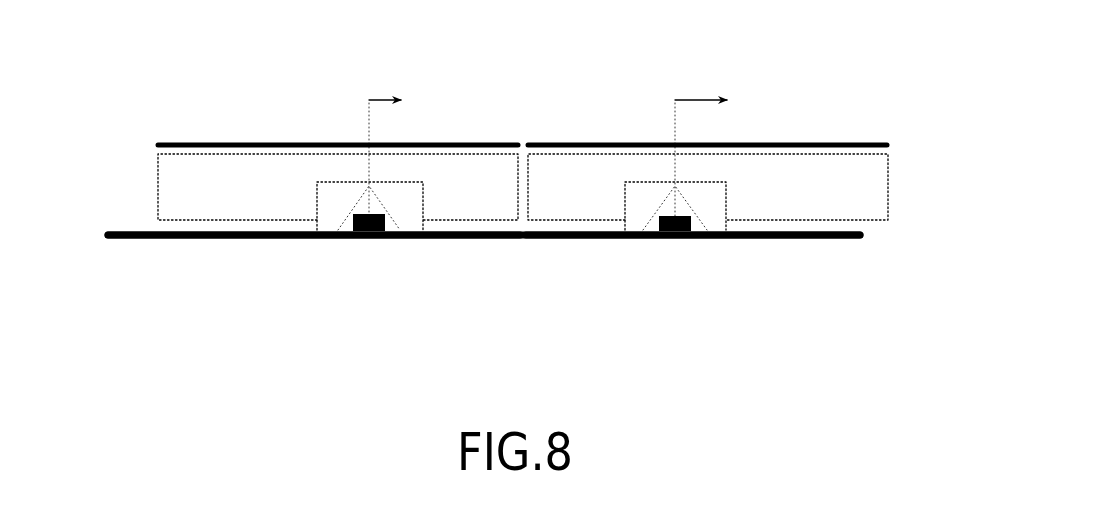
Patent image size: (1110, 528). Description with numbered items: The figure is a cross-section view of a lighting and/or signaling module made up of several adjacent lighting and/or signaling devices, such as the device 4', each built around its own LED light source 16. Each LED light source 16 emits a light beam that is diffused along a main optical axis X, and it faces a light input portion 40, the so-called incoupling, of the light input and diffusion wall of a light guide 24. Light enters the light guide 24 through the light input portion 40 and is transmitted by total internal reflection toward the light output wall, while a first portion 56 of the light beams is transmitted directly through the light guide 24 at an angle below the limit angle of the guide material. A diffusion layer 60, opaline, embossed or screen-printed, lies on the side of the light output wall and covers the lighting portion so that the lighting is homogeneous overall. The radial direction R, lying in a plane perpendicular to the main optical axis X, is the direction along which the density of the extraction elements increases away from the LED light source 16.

The diffusion layer 60 is at (270, 142).
The light guide 24 is at (188, 193).
The light input portion 40 is at (371, 212).
The LED light source 16 is at (356, 238).
The first portion of the light beams 56 is at (762, 231).
The radial direction R is at (548, 147).
The main optical axis X is at (368, 257).
The lighting and/or signaling device 4' is at (701, 304).